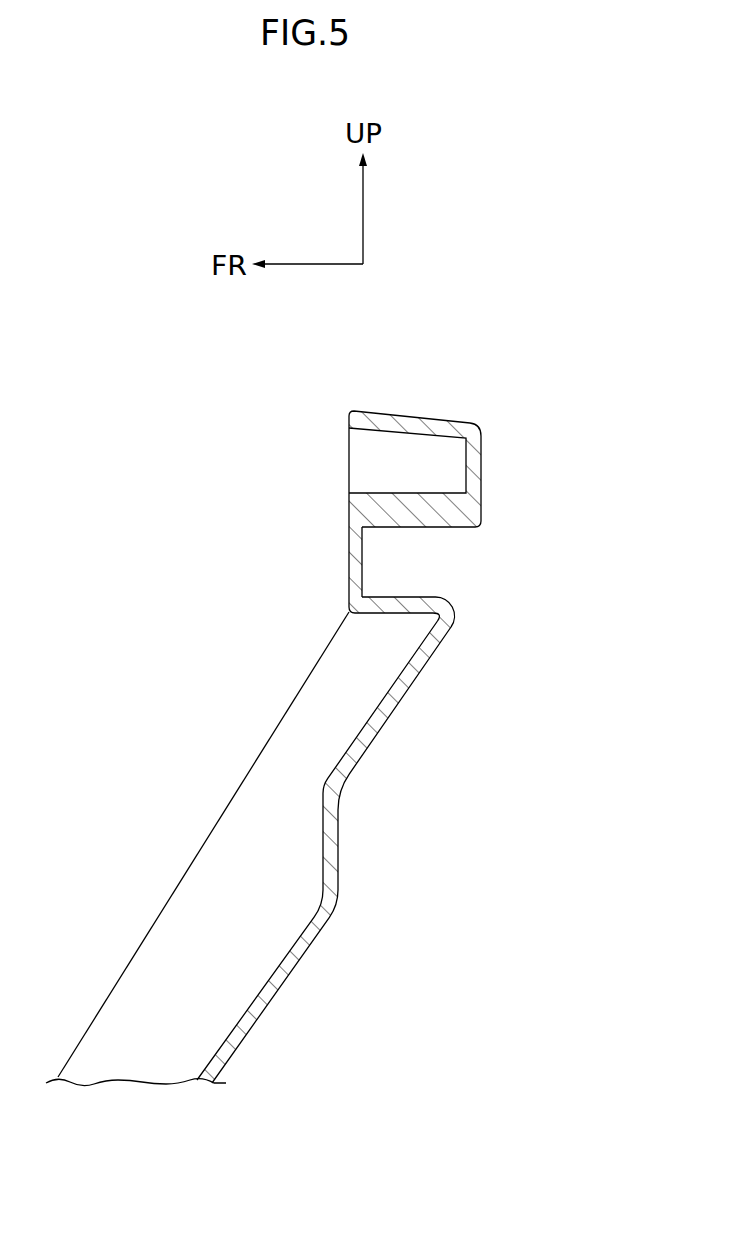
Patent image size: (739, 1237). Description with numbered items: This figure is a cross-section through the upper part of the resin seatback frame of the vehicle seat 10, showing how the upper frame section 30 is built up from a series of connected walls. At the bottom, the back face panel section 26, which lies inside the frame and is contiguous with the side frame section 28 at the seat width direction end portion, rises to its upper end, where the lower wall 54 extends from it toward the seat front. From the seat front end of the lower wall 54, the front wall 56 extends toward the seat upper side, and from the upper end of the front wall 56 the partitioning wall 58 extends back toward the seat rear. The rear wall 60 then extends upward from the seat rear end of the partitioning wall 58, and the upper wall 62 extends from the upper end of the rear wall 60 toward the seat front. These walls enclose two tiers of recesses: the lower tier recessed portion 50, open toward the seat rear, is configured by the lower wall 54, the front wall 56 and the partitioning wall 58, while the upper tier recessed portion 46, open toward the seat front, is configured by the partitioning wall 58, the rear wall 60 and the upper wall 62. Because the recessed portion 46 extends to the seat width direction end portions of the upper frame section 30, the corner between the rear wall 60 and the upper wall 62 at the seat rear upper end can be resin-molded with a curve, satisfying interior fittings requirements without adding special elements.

The vehicle seat 10 is at (262, 416).
The back face panel section 26 is at (329, 850).
The side frame section 28 is at (207, 847).
The upper frame section 30 is at (429, 402).
The recessed portion 46 is at (422, 478).
The recessed portion 50 is at (427, 578).
The lower wall 54 is at (387, 607).
The front wall 56 is at (349, 553).
The partitioning wall 58 is at (440, 520).
The rear wall 60 is at (483, 462).
The upper wall 62 is at (375, 420).